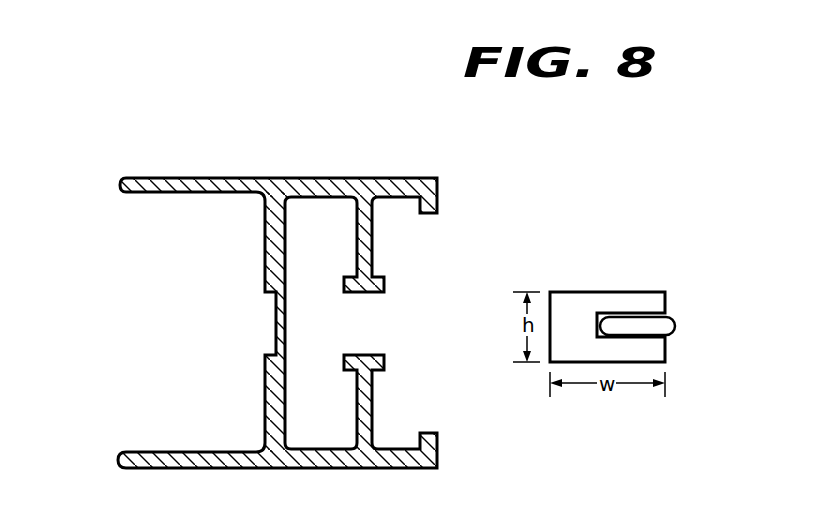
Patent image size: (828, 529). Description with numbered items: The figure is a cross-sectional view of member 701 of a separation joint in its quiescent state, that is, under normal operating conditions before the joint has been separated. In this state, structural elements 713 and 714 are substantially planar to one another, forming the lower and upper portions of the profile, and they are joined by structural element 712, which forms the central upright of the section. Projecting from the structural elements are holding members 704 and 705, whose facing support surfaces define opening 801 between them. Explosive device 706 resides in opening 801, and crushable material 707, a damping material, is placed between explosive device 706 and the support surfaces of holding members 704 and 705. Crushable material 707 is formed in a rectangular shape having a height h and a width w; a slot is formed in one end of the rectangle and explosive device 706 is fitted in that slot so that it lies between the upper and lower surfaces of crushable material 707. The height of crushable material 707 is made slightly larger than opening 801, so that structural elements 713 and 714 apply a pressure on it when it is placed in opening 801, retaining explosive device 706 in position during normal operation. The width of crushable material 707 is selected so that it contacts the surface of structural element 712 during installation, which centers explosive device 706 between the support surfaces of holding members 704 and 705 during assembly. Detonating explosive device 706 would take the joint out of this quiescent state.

The member 701 is at (435, 161).
The holding member 704 is at (370, 242).
The holding member 705 is at (367, 398).
The explosive device 706 is at (667, 322).
The crushable material 707 is at (612, 297).
The structural element 712 is at (272, 387).
The structural element 713 is at (188, 458).
The structural element 714 is at (192, 182).
The opening 801 is at (405, 322).